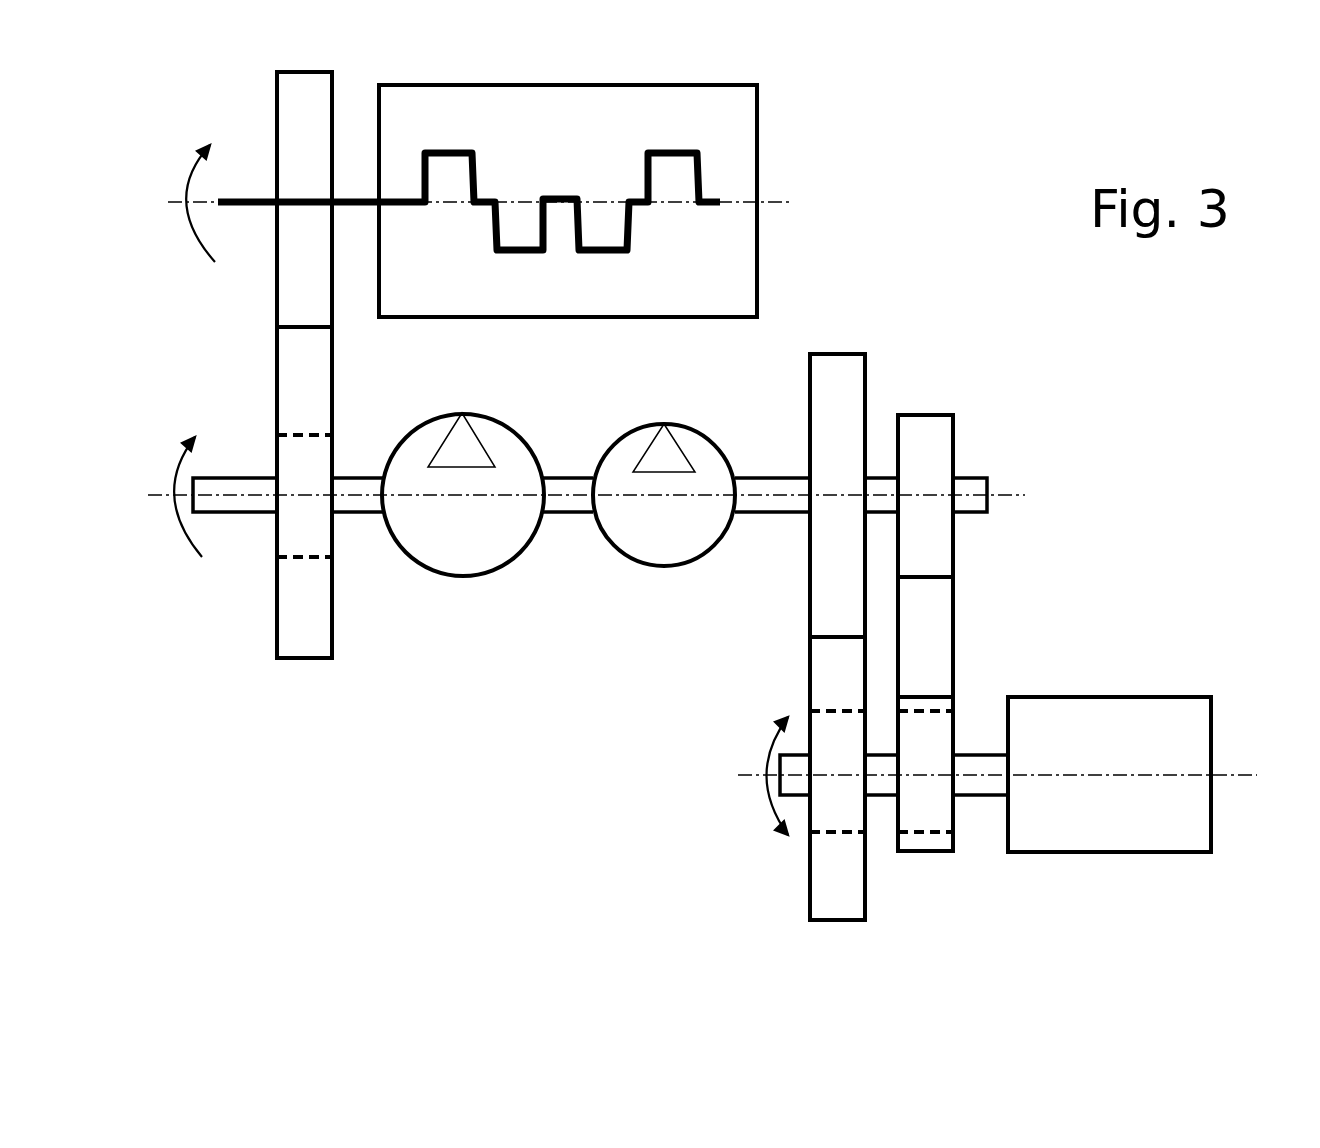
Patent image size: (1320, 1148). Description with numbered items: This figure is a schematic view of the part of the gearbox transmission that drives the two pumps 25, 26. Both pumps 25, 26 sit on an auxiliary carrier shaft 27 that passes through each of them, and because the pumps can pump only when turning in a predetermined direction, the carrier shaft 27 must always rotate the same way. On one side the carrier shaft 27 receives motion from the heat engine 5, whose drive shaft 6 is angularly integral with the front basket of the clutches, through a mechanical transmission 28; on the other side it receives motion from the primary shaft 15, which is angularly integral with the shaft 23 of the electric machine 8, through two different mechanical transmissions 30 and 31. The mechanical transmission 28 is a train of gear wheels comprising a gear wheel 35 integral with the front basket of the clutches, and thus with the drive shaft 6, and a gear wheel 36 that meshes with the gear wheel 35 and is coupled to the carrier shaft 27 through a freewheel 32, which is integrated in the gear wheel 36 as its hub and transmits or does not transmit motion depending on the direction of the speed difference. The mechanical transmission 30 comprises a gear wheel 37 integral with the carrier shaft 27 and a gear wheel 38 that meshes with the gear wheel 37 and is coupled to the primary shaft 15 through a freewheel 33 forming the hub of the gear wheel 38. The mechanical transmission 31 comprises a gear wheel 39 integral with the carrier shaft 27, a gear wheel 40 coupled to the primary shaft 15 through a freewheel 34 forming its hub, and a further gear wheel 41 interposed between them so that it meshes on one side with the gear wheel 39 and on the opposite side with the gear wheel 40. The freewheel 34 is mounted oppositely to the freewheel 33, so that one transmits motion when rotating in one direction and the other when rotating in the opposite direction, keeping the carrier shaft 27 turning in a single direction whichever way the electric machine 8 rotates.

The heat engine 5 is at (723, 268).
The drive shaft 6 is at (522, 256).
The electric machine 8 is at (1135, 715).
The primary shaft 15 is at (990, 731).
The shaft of the electric machine 23 is at (987, 762).
The pump 25 is at (657, 535).
The pump 26 is at (455, 528).
The auxiliary carrier shaft 27 is at (227, 503).
The mechanical transmission 28 is at (282, 408).
The mechanical transmission 30 is at (784, 637).
The mechanical transmission 31 is at (986, 628).
The freewheel 32 is at (300, 537).
The freewheel 33 is at (827, 725).
The freewheel 34 is at (933, 812).
The gear wheel 35 is at (300, 105).
The gear wheel 36 is at (307, 623).
The gear wheel 37 is at (830, 395).
The gear wheel 38 is at (825, 893).
The gear wheel 39 is at (925, 442).
The gear wheel 40 is at (935, 838).
The gear wheel 41 is at (925, 645).